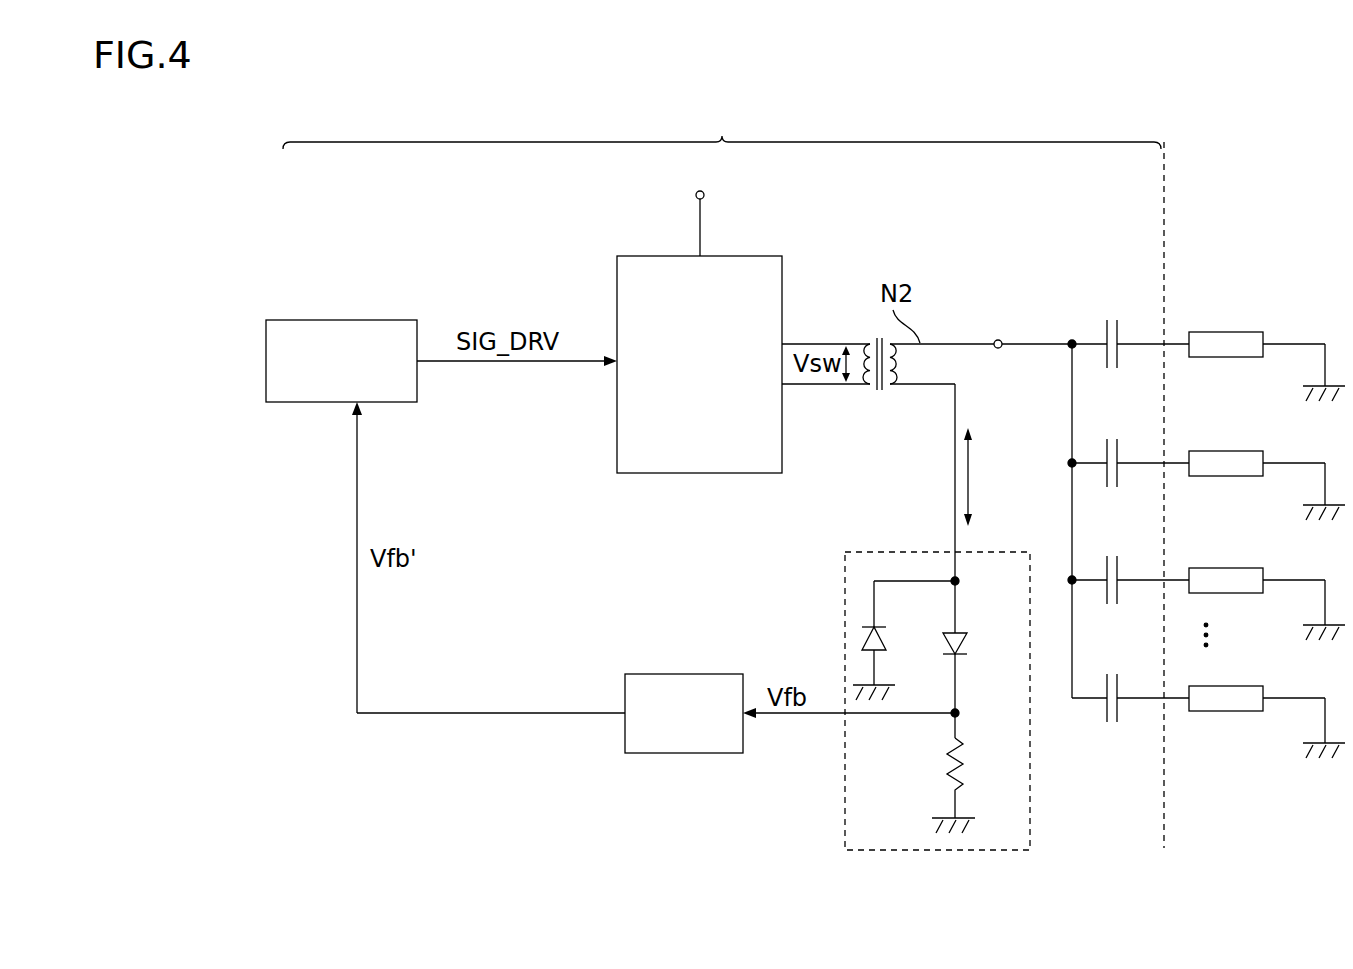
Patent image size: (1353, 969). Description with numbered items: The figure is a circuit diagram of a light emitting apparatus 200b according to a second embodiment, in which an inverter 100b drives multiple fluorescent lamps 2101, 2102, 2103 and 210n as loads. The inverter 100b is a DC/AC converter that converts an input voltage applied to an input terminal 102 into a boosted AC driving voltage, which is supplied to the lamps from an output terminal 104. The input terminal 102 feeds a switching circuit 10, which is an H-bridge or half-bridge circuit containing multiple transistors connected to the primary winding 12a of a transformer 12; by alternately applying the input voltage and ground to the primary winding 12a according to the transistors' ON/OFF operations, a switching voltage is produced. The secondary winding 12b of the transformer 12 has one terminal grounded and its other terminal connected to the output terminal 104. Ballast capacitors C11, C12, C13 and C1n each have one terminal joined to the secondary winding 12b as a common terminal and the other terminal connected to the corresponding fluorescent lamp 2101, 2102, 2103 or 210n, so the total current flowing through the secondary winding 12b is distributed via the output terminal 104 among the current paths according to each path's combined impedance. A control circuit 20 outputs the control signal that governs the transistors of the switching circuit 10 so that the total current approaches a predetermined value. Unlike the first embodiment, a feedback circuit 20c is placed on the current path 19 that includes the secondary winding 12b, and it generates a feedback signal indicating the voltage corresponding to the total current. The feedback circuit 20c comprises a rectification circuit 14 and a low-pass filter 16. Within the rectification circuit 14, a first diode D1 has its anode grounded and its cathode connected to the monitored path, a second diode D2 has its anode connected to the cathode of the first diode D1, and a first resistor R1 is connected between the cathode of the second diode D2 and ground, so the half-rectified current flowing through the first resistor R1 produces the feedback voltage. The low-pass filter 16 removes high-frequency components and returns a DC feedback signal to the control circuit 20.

The inverter 100b is at (722, 127).
The light emitting apparatus 200b is at (1129, 118).
The switching circuit 10 is at (750, 256).
The transformer 12 is at (888, 422).
The primary winding 12a is at (866, 388).
The secondary winding 12b is at (892, 388).
The rectification circuit 14 is at (901, 701).
The low-pass filter 16 is at (692, 674).
The current path 19 is at (972, 468).
The control circuit 20 is at (380, 320).
The feedback circuit 20c is at (807, 624).
The input terminal 102 is at (704, 193).
The output terminal 104 is at (1000, 348).
The fluorescent lamp 2101 is at (1236, 332).
The fluorescent lamp 2102 is at (1236, 451).
The fluorescent lamp 2103 is at (1236, 568).
The fluorescent lamp 210n is at (1262, 663).
The ballast capacitor C11 is at (1112, 320).
The ballast capacitor C12 is at (1133, 422).
The ballast capacitor C13 is at (1112, 556).
The ballast capacitor C1n is at (1112, 674).
The first diode D1 is at (886, 644).
The second diode D2 is at (966, 645).
The first resistor R1 is at (962, 778).